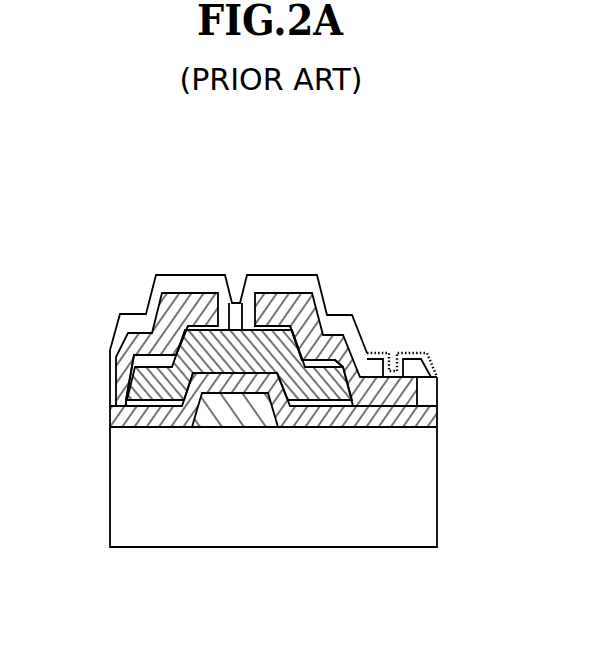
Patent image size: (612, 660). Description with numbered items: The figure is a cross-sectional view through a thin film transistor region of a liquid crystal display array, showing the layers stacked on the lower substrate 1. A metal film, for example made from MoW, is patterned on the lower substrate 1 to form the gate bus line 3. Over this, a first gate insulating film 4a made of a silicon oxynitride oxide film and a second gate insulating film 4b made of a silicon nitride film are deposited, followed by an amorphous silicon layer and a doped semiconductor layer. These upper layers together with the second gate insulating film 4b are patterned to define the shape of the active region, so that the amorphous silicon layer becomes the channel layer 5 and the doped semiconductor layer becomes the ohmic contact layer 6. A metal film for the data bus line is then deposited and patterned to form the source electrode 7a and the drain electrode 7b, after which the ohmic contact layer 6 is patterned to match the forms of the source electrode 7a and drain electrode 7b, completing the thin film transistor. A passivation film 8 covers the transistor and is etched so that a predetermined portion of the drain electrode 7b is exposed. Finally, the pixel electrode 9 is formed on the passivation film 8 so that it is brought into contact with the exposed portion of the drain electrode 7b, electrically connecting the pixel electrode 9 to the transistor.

The lower substrate 1 is at (422, 505).
The gate bus line 3 is at (238, 405).
The first gate insulating film 4a is at (428, 420).
The second gate insulating film 4b is at (322, 402).
The channel layer 5 is at (237, 338).
The ohmic contact layer 6 is at (192, 297).
The source electrode 7a is at (158, 300).
The drain electrode 7b is at (323, 300).
The passivation film 8 is at (278, 290).
The pixel electrode 9 is at (428, 354).